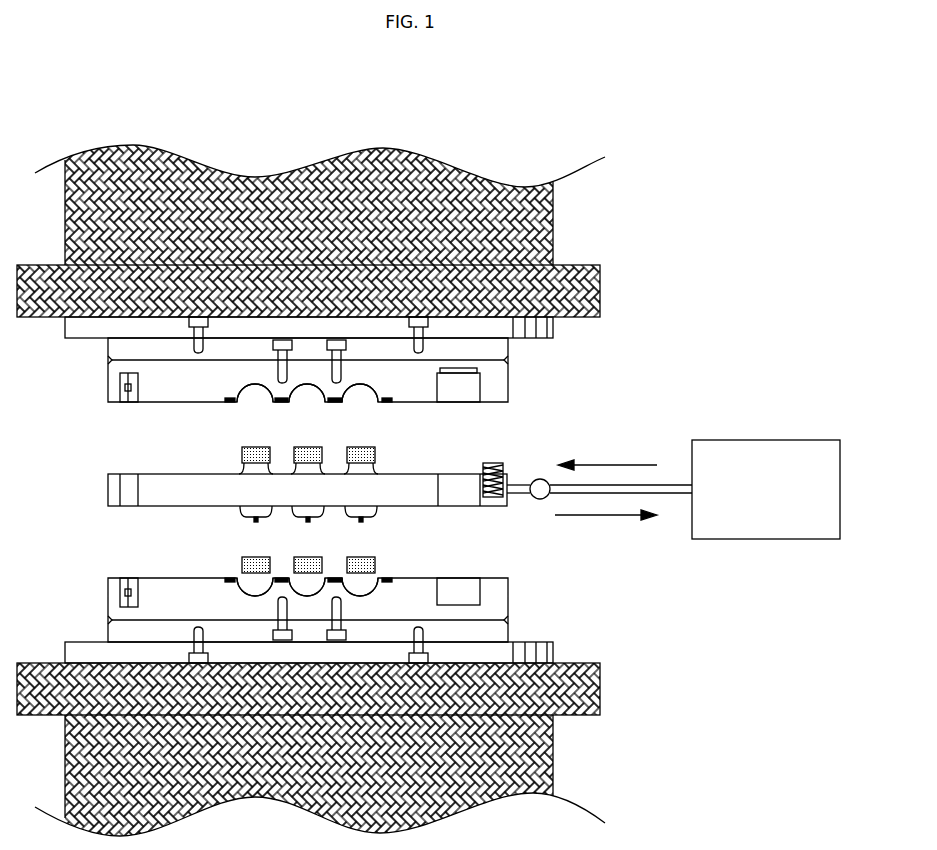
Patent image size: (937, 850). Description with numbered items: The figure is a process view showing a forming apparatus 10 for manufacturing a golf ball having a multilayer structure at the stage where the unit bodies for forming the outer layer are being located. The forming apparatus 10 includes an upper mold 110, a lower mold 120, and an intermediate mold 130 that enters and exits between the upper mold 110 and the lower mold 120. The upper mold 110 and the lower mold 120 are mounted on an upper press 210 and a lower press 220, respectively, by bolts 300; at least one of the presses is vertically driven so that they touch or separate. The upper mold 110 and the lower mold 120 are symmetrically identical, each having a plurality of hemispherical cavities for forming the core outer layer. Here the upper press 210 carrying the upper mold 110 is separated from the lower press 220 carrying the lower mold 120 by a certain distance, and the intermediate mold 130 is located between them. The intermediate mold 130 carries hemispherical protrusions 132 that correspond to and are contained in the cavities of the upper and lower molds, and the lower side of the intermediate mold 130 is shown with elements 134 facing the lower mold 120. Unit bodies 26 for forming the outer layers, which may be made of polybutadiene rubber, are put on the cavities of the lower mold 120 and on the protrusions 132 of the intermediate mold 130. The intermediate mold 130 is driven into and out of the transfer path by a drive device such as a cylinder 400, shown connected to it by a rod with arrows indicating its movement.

The forming apparatus 10 is at (380, 80).
The unit body for forming the outer layer 26 is at (250, 448).
The upper mold 110 is at (354, 394).
The lower mold 120 is at (354, 596).
The intermediate mold 130 is at (162, 483).
The protrusion 132 is at (377, 468).
The lower pad 134 is at (377, 519).
The upper press 210 is at (592, 289).
The lower press 220 is at (587, 688).
The bolt 300 is at (193, 348).
The cylinder 400 is at (759, 440).